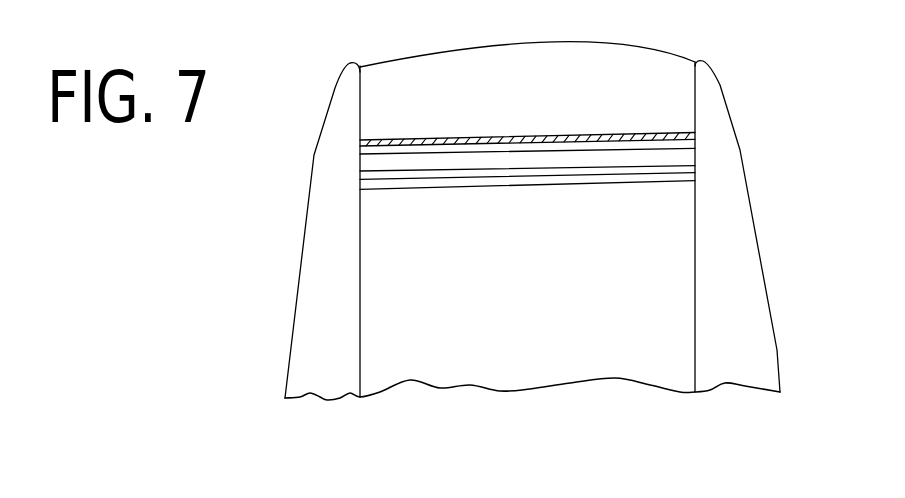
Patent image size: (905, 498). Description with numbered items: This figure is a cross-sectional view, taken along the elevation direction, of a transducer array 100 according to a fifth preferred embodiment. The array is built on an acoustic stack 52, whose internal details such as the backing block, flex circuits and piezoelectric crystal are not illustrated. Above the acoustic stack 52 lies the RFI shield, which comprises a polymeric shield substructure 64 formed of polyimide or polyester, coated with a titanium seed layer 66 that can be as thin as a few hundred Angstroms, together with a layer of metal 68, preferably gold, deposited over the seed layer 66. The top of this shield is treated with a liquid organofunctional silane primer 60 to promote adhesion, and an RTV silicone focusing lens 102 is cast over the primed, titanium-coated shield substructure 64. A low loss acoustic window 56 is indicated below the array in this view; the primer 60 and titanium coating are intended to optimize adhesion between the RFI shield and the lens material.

The transducer array 100 is at (272, 328).
The RTV silicone focusing lens 102 is at (593, 73).
The acoustic stack 52 is at (413, 298).
The low loss acoustic window 56 is at (349, 492).
The primer 60 is at (604, 134).
The shield substructure 64 is at (373, 166).
The seed layer 66 is at (663, 170).
The layer of metal 68 is at (622, 180).